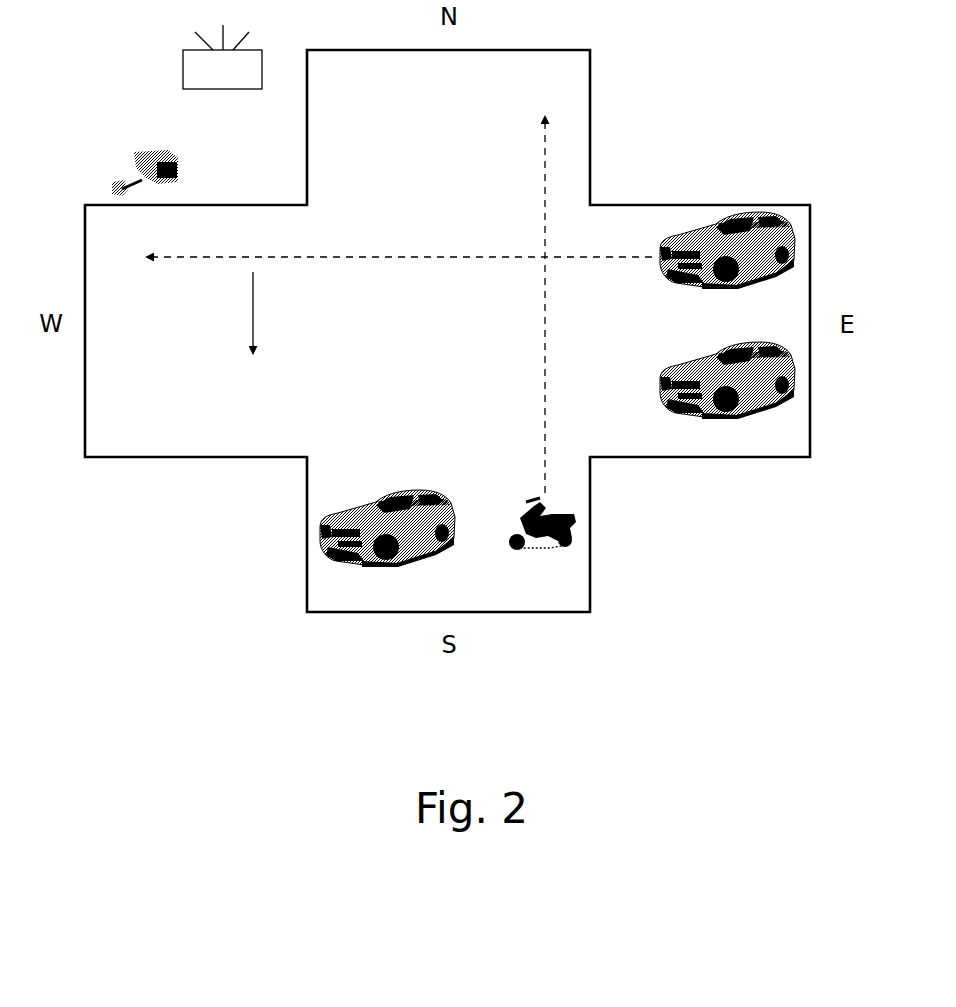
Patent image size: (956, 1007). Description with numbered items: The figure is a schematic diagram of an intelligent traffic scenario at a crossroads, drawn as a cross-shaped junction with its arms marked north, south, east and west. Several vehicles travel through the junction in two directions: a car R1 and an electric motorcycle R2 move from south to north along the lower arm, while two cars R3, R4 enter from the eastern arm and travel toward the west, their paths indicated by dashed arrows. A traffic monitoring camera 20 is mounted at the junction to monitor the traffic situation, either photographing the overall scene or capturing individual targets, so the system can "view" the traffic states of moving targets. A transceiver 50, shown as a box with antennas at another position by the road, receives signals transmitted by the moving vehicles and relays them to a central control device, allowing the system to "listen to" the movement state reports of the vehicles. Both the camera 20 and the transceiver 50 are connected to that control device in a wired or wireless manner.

The traffic monitoring camera 20 is at (130, 142).
The transceiver 50 is at (188, 47).
The car R1 is at (387, 542).
The electric motorcycle R2 is at (542, 541).
The car R3 is at (727, 396).
The car R4 is at (727, 267).